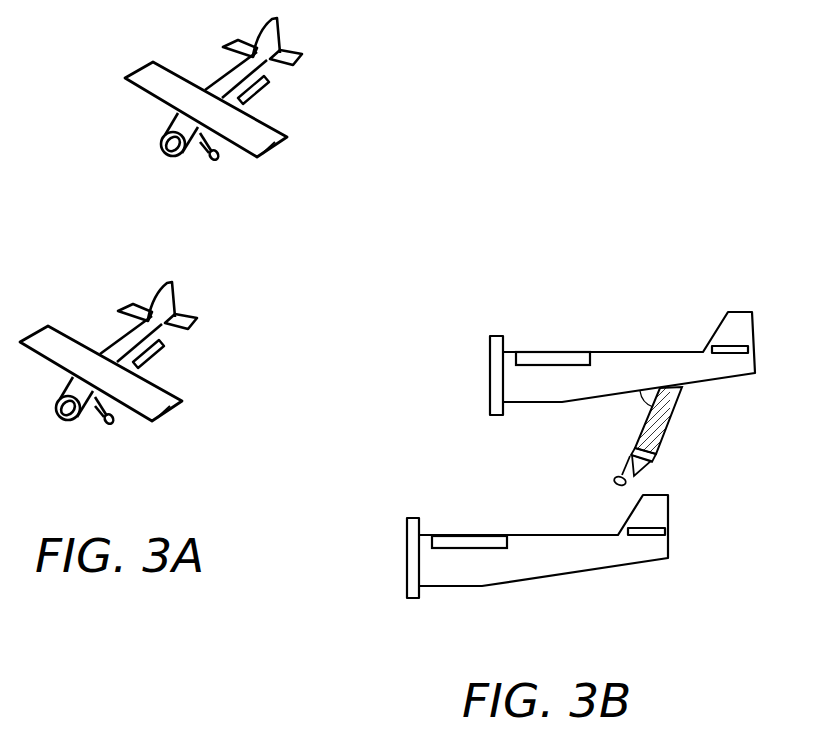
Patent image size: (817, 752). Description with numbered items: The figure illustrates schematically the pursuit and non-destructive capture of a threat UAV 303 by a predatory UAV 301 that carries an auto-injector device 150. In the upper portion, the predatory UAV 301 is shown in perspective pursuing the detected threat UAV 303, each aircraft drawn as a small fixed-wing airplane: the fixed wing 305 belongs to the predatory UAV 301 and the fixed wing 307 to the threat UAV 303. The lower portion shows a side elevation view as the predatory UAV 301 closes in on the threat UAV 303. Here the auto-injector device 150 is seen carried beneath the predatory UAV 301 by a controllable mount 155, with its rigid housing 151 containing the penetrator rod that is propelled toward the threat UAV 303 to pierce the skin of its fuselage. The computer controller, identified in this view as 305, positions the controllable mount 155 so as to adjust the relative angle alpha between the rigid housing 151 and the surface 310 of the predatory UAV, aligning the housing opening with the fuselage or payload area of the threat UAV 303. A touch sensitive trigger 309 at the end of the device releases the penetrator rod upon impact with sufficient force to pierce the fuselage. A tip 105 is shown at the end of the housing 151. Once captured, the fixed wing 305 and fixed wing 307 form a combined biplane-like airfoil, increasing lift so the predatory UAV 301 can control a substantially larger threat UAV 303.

In FIG. 3A, the predatory UAV 301 is at (267, 98).
In FIG. 3B, the predatory UAV 301 is at (638, 400).
In FIG. 3A, the threat UAV 303 is at (136, 353).
In FIG. 3B, the threat UAV 303 is at (537, 556).
In FIG. 3A, the fixed wing of predatory UAV 305 is at (270, 147).
In FIG. 3B, the fixed wing of predatory UAV 305 is at (542, 367).
In FIG. 3A, the fixed wing of threat UAV 307 is at (133, 374).
In FIG. 3B, the fixed wing of threat UAV 307 is at (483, 548).
In FIG. 3A, the auto-injector device 150 is at (263, 87).
In FIG. 3B, the auto-injector device 150 is at (677, 436).
In FIG. 3B, the rigid housing 151 is at (675, 413).
In FIG. 3B, the controllable mount 155 is at (672, 387).
In FIG. 3B, the sensor tip 105 is at (650, 461).
In FIG. 3B, the touch sensitive trigger 309 is at (618, 474).
In FIG. 3B, the surface of the predatory UAV 310 is at (638, 413).